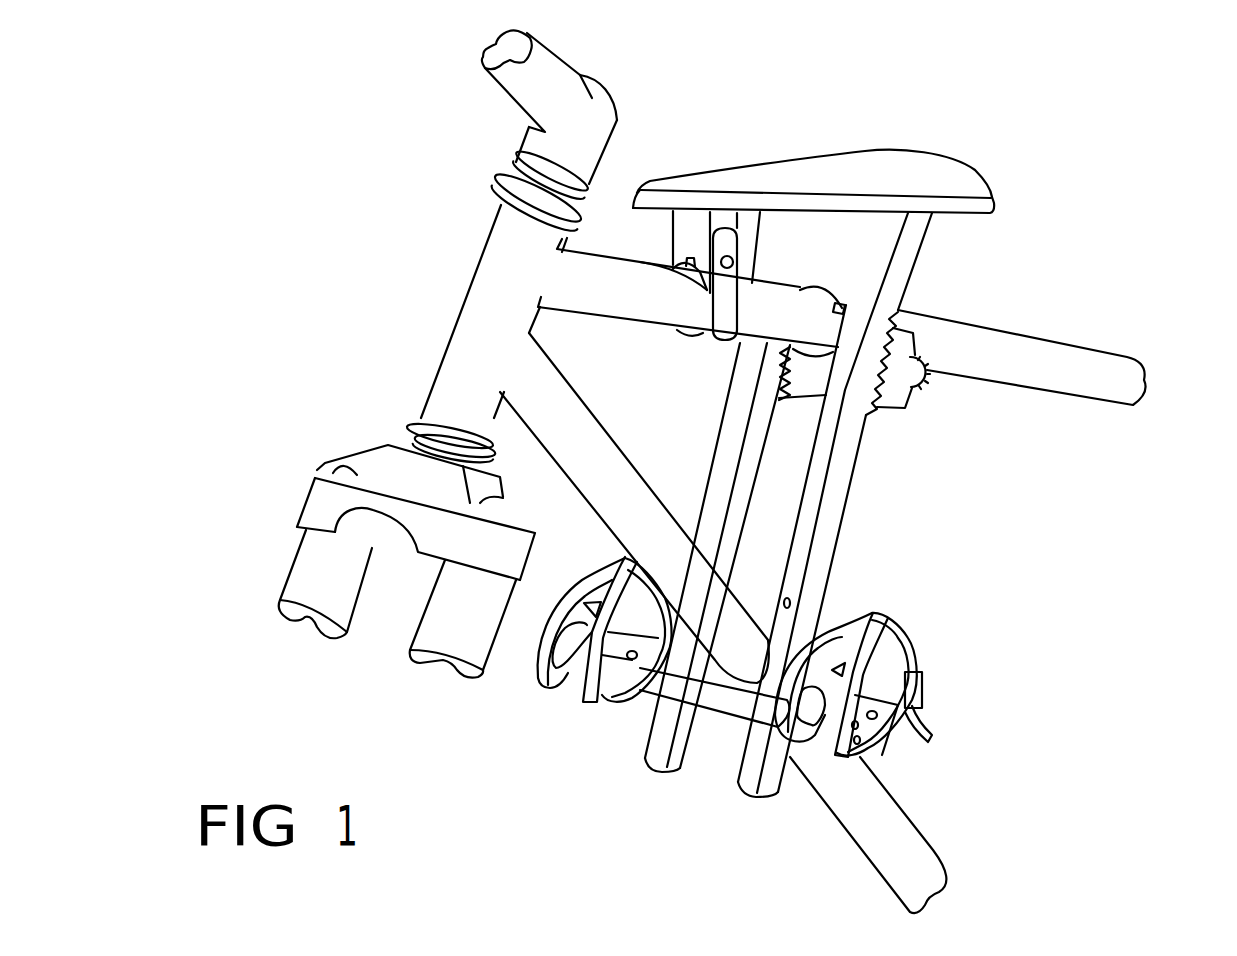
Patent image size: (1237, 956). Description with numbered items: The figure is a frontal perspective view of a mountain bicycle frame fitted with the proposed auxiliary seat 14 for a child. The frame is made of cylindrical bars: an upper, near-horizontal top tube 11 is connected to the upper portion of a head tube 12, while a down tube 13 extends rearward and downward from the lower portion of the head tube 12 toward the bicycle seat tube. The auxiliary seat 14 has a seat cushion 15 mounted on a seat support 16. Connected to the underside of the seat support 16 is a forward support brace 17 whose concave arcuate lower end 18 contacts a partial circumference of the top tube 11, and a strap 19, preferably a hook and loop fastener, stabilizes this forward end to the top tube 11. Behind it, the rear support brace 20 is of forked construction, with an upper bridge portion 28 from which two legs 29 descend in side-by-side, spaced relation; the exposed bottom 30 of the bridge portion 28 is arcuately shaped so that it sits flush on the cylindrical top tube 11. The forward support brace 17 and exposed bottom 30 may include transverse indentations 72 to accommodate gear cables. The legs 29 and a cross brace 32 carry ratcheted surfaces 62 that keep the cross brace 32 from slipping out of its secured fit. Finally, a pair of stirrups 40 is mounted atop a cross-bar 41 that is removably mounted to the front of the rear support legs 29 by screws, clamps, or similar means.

The top tube 11 is at (1128, 355).
The head tube 12 is at (462, 305).
The down tube 13 is at (934, 850).
The auxiliary seat 14 is at (833, 175).
The seat cushion 15 is at (863, 152).
The seat support 16 is at (984, 215).
The forward support brace 17 is at (670, 235).
The concave arcuate lower end 18 is at (710, 272).
The strap 19 is at (719, 340).
The rear support brace 20 is at (932, 233).
The bridge portion 28 is at (842, 250).
The legs 29 is at (805, 522).
The exposed bottom 30 is at (800, 290).
The cross brace 32 is at (897, 407).
The stirrups 40 is at (897, 636).
The cross-bar 41 is at (720, 752).
The ratcheted surfaces 62 is at (868, 422).
The indentations 72 is at (663, 268).